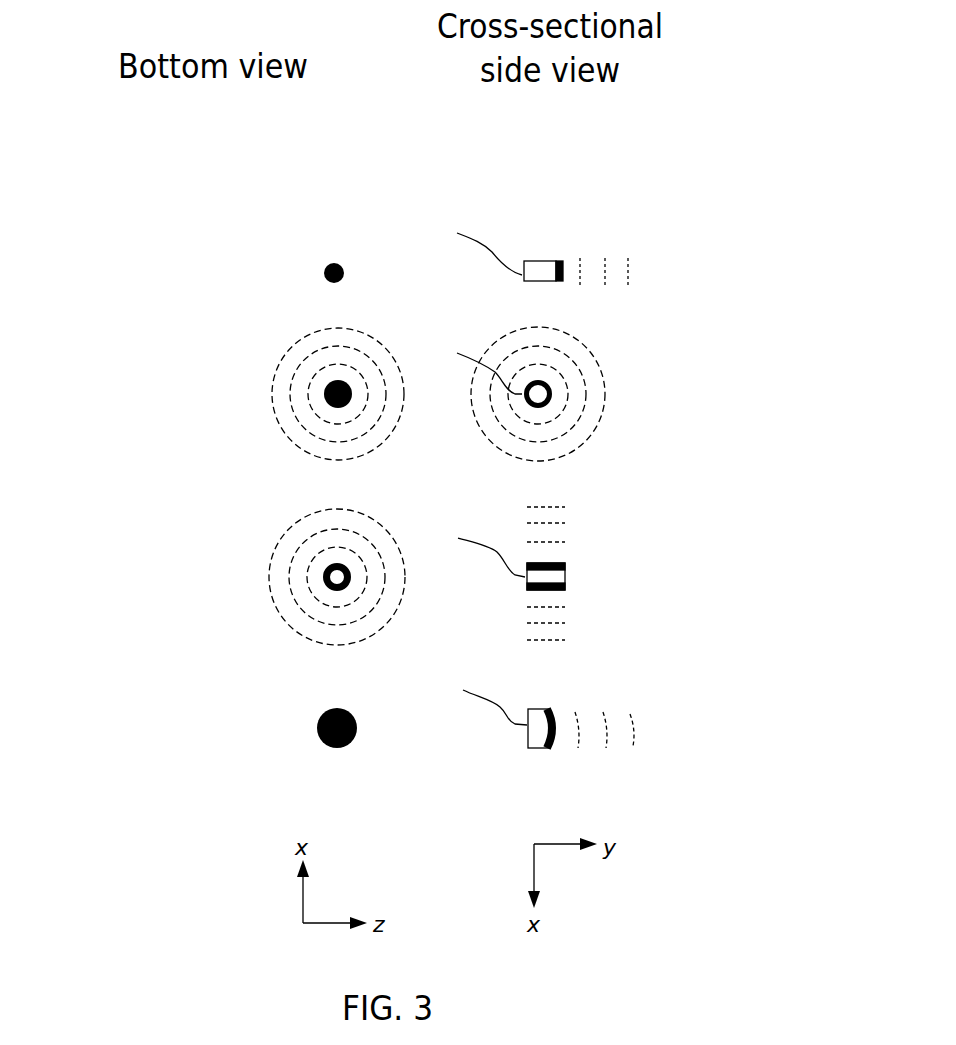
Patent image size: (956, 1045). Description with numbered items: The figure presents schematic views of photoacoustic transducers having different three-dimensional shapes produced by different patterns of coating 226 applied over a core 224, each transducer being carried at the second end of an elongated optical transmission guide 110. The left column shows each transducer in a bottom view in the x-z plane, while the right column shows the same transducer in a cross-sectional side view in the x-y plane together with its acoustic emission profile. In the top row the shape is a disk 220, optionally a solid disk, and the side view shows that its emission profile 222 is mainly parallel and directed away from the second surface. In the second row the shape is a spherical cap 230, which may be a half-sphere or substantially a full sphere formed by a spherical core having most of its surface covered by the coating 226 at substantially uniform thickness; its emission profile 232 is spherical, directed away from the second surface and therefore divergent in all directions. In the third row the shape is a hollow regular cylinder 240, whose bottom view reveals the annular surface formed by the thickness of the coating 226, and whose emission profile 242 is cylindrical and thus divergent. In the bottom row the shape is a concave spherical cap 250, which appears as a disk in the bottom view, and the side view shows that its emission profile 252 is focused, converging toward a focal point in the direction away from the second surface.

The elongated optical transmission guide 110 is at (478, 238).
The disk 220 is at (324, 272).
The emission profile 222 is at (626, 271).
The core 224 is at (534, 261).
The coating 226 is at (558, 261).
The spherical cap 230 is at (323, 394).
The emission profile 232 is at (353, 332).
The hollow regular cylinder 240 is at (326, 575).
The emission profile 242 is at (348, 516).
The concave spherical cap 250 is at (318, 727).
The emission profile 252 is at (628, 734).